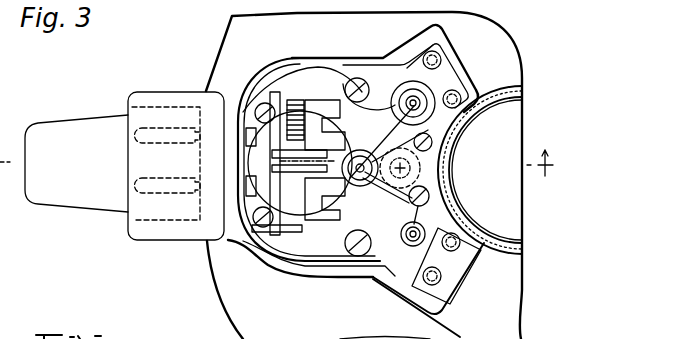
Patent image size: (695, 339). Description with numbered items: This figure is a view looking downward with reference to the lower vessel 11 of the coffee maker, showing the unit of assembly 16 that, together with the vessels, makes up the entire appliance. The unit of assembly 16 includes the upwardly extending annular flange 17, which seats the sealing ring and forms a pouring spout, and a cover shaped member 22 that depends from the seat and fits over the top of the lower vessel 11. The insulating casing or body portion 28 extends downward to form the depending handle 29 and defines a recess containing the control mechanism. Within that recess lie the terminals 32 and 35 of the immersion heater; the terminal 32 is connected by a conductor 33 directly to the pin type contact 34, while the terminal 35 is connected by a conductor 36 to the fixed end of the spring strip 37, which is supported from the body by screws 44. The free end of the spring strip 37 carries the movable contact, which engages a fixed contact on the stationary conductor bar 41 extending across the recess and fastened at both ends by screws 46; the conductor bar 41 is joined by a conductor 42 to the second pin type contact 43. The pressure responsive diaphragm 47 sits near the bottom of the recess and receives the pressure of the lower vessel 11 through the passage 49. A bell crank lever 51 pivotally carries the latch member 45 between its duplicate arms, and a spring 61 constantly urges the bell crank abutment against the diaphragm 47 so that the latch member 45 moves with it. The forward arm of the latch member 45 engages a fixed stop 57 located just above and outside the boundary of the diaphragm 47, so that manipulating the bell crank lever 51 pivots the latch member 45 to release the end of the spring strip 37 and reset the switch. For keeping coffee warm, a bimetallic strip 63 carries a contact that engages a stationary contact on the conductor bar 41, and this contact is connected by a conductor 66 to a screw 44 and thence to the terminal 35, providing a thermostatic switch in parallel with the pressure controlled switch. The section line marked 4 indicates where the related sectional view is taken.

The section line 4- 4 is at (540, 171).
The housing 11 is at (215, 267).
The housing wall 16 is at (337, 49).
The ring gear 17 is at (487, 100).
The mounting plate 22 is at (490, 43).
The housing lower wall 28 is at (264, 264).
The handle 29 is at (52, 190).
The bearing 32 is at (418, 103).
The cover plate 33 is at (323, 68).
The slot 34 is at (160, 128).
The pivot pin 35 is at (421, 242).
The pivot 36 is at (417, 229).
The hub 37 is at (378, 171).
The cover edge 41 is at (340, 252).
The cover 42 is at (305, 258).
The grip block 43 is at (150, 197).
The roller 44 is at (432, 143).
The slide block 45 is at (305, 172).
The screw 46 is at (361, 77).
The bottom bar 47 is at (297, 226).
The link 49 is at (446, 162).
The slide bar 51 is at (293, 174).
The cam disc 57 is at (326, 222).
The spring 61 is at (294, 111).
The gear 63 is at (400, 161).
The lever arm 66 is at (381, 184).